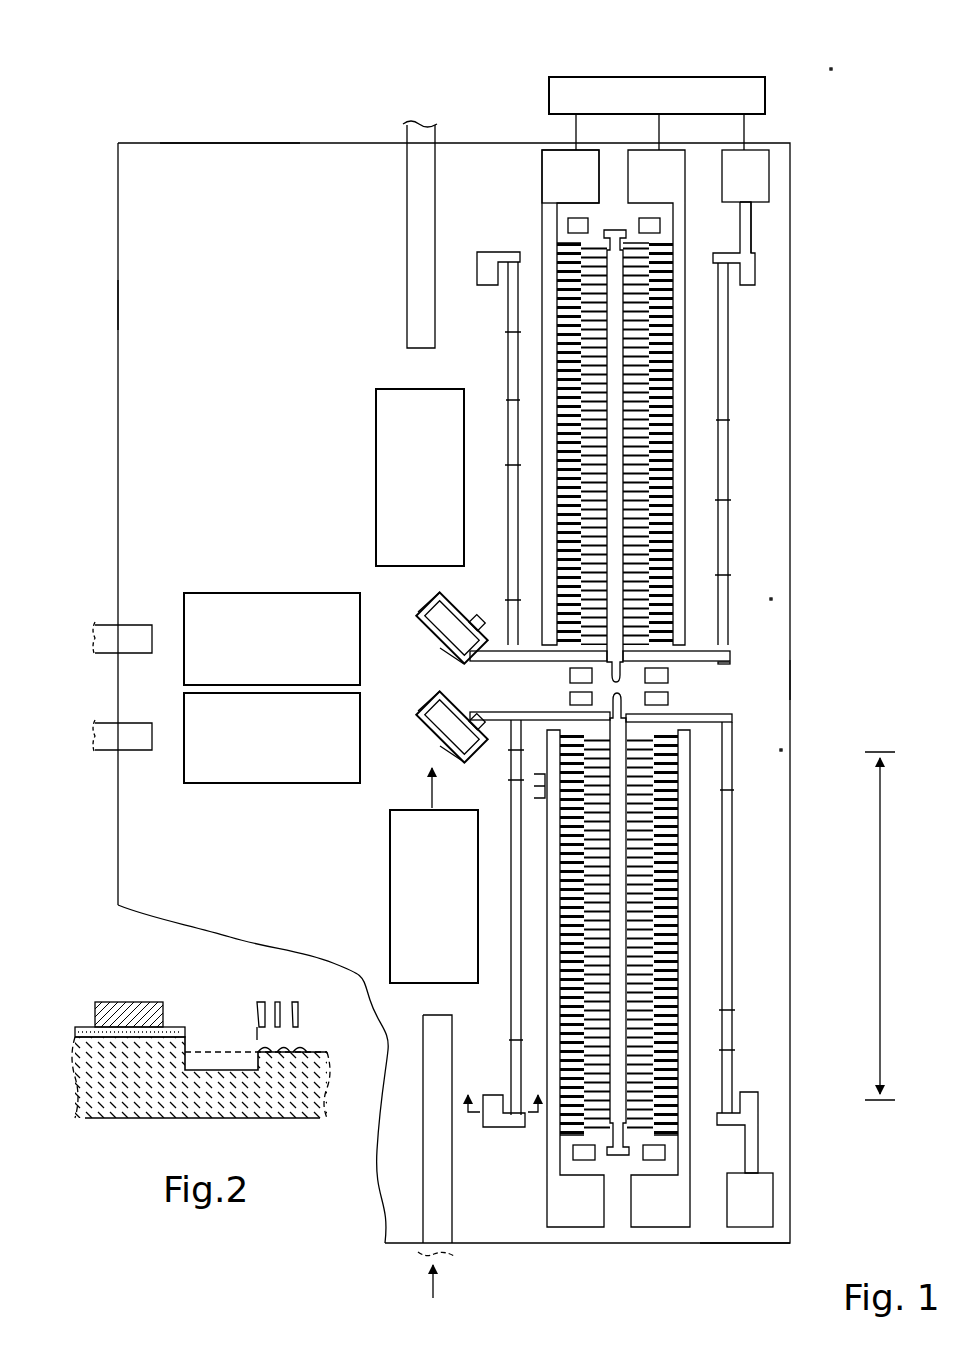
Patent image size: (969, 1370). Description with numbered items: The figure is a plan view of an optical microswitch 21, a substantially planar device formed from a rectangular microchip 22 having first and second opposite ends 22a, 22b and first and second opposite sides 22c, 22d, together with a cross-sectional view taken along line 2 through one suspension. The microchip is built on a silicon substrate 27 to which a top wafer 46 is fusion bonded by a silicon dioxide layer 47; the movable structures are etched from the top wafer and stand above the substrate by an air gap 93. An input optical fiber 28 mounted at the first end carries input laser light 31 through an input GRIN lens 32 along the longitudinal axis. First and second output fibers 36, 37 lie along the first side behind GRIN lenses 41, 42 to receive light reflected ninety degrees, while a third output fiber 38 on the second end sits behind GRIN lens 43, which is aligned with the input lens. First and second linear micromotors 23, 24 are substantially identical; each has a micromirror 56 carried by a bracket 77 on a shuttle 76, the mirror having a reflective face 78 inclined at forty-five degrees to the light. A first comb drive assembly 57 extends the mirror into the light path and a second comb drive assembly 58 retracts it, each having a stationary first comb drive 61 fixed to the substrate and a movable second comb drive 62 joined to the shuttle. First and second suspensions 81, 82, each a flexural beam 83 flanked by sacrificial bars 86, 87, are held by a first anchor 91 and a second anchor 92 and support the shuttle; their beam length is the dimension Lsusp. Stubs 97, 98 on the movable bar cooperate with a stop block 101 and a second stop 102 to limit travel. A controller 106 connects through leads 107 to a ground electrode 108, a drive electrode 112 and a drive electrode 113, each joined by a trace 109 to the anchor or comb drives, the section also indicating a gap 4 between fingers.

In FIG. 1, the optical microswitch 21 is at (836, 70).
In FIG. 1, the microchip 22 is at (794, 419).
In FIG. 1, the first end of microchip 22a is at (755, 1246).
In FIG. 1, the second end of microchip 22b is at (262, 142).
In FIG. 1, the first side of microchip 22c is at (116, 296).
In FIG. 1, the second side of microchip 22d is at (794, 674).
In FIG. 1, the first linear micromotor 23 is at (790, 752).
In FIG. 1, the second linear micromotor 24 is at (779, 600).
In FIG. 1, the substrate 27 is at (195, 142).
In FIG. 2, the substrate 27 is at (140, 1124).
In FIG. 1, the input optical fiber 28 is at (423, 1178).
In FIG. 1, the input laser light 31 is at (422, 786).
In FIG. 1, the input GRIN lens 32 is at (390, 895).
In FIG. 1, the first output fiber 36 is at (142, 752).
In FIG. 1, the second output fiber 37 is at (134, 624).
In FIG. 1, the third output fiber 38 is at (406, 218).
In FIG. 1, the GRIN lens 41 is at (218, 783).
In FIG. 1, the GRIN lens 42 is at (228, 593).
In FIG. 1, the GRIN lens 43 is at (376, 504).
In FIG. 2, the top wafer 46 is at (128, 1002).
In FIG. 2, the silicon dioxide layer 47 is at (78, 1030).
In FIG. 1, the micromirror 56 is at (444, 606).
In FIG. 1, the first comb drive assembly 57 is at (538, 244).
In FIG. 1, the second comb drive assembly 58 is at (686, 244).
In FIG. 1, the first comb drive 61 is at (542, 450).
In FIG. 1, the second comb drive 62 is at (603, 646).
In FIG. 1, the shuttle 76 is at (718, 708).
In FIG. 1, the mirror holder or bracket 77 is at (416, 606).
In FIG. 1, the reflective face 78 is at (438, 646).
In FIG. 1, the first suspension 81 is at (502, 356).
In FIG. 2, the first suspension 81 is at (254, 1010).
In FIG. 1, the second suspension 82 is at (730, 358).
In FIG. 1, the flexural beam 83 is at (506, 404).
In FIG. 2, the flexural beam 83 is at (278, 1002).
In FIG. 1, the first sacrificial bar 86 is at (510, 494).
In FIG. 2, the first sacrificial bar 86 is at (254, 1030).
In FIG. 1, the second sacrificial bar 87 is at (510, 598).
In FIG. 2, the second sacrificial bar 87 is at (300, 1008).
In FIG. 1, the first anchor 91 is at (478, 250).
In FIG. 1, the second anchor 92 is at (772, 264).
In FIG. 2, the air gap 93 is at (298, 1030).
In FIG. 1, the first stub 97 is at (612, 230).
In FIG. 1, the second stub 98 is at (625, 690).
In FIG. 1, the stop block 101 is at (562, 220).
In FIG. 1, the second stop 102 is at (612, 1272).
In FIG. 1, the controller and voltage generator 106 is at (765, 98).
In FIG. 1, the electrical leads 107 is at (764, 128).
In FIG. 1, the ground electrode 108 is at (770, 158).
In FIG. 1, the trace 109 is at (540, 184).
In FIG. 1, the second drive electrode 112 is at (550, 150).
In FIG. 1, the third drive electrode 113 is at (670, 162).
In FIG. 1, the finger gap 4 is at (532, 785).
In FIG. 1, the section line of FIG. 2 is at (501, 1091).
In FIG. 1, the length of flexural beams Lsusp is at (871, 926).